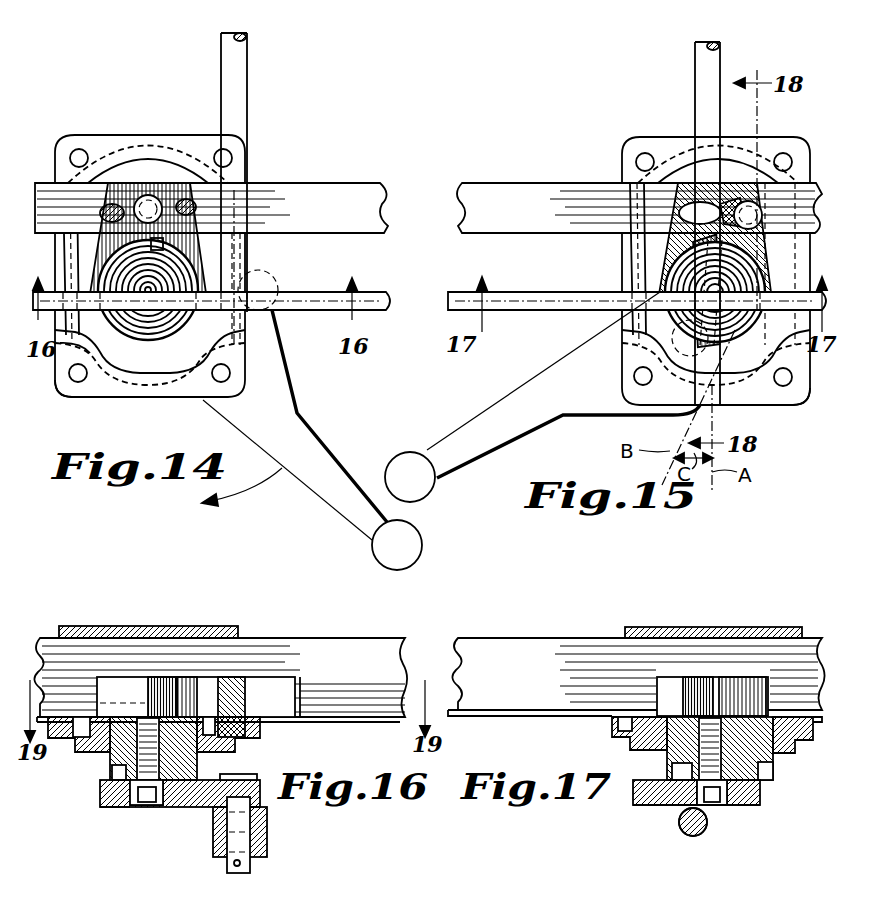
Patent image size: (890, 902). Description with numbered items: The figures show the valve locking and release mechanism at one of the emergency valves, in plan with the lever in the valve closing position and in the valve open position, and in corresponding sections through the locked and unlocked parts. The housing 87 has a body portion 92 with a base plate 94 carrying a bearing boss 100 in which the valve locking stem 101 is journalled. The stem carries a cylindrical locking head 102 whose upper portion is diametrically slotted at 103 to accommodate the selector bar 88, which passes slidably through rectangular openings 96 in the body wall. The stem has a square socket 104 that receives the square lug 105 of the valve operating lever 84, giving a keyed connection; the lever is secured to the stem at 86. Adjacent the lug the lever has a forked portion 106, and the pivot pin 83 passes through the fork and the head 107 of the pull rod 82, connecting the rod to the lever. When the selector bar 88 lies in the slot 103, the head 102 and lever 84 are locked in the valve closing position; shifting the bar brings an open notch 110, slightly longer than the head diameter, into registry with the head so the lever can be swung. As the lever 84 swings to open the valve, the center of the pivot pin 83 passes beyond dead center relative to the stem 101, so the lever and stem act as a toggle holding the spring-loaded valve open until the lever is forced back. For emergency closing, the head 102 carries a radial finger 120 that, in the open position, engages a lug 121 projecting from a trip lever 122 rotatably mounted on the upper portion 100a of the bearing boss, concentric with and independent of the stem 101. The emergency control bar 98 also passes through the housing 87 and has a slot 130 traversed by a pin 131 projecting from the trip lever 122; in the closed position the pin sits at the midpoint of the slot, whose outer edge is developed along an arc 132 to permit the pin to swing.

In FIG. 14, the pull rod 82 is at (248, 60).
In FIG. 15, the pull rod 82 is at (720, 59).
In FIG. 17, the pull rod 82 is at (707, 826).
In FIG. 14, the pivot pin 83 is at (264, 288).
In FIG. 15, the pivot pin 83 is at (668, 415).
In FIG. 16, the pivot pin 83 is at (250, 874).
In FIG. 14, the valve operating lever 84 is at (348, 518).
In FIG. 15, the valve operating lever 84 is at (480, 461).
In FIG. 16, the valve operating lever 84 is at (203, 809).
In FIG. 17, the valve operating lever 84 is at (640, 808).
In FIG. 16, the securing point 86 is at (147, 807).
In FIG. 17, the securing point 86 is at (722, 806).
In FIG. 14, the housing 87 is at (74, 128).
In FIG. 15, the housing 87 is at (613, 153).
In FIG. 16, the housing 87 is at (99, 620).
In FIG. 17, the housing 87 is at (646, 619).
In FIG. 14, the selector bar 88 is at (380, 292).
In FIG. 15, the selector bar 88 is at (527, 310).
In FIG. 16, the selector bar 88 is at (362, 651).
In FIG. 17, the selector bar 88 is at (500, 653).
In FIG. 16, the body portion 92 is at (135, 626).
In FIG. 14, the base plate 94 is at (82, 395).
In FIG. 15, the base plate 94 is at (733, 403).
In FIG. 16, the base plate 94 is at (245, 743).
In FIG. 17, the base plate 94 is at (780, 754).
In FIG. 17, the rectangular openings 96 is at (624, 636).
In FIG. 14, the emergency control bar 98 is at (362, 191).
In FIG. 15, the emergency control bar 98 is at (505, 192).
In FIG. 16, the emergency control bar 98 is at (342, 722).
In FIG. 16, the bearing boss 100 is at (104, 777).
In FIG. 17, the bearing boss 100 is at (765, 772).
In FIG. 16, the upper portion of bearing boss 100a is at (198, 698).
In FIG. 17, the upper portion of bearing boss 100a is at (673, 700).
In FIG. 16, the valve locking stem 101 is at (110, 756).
In FIG. 17, the valve locking stem 101 is at (667, 758).
In FIG. 14, the cylindrical locking head 102 is at (121, 397).
In FIG. 15, the cylindrical locking head 102 is at (678, 338).
In FIG. 16, the cylindrical locking head 102 is at (196, 697).
In FIG. 17, the cylindrical locking head 102 is at (735, 680).
In FIG. 14, the diametrical slot 103 is at (215, 351).
In FIG. 15, the diametrical slot 103 is at (672, 286).
In FIG. 17, the diametrical slot 103 is at (700, 690).
In FIG. 16, the square socket 104 is at (203, 766).
In FIG. 17, the square socket 104 is at (762, 794).
In FIG. 16, the square lug 105 is at (113, 805).
In FIG. 17, the square lug 105 is at (686, 807).
In FIG. 16, the forked portion 106 is at (268, 850).
In FIG. 16, the head of pull rod 107 is at (268, 827).
In FIG. 16, the open notch 110 is at (300, 679).
In FIG. 14, the radial finger 120 is at (88, 343).
In FIG. 15, the radial finger 120 is at (698, 260).
In FIG. 14, the lug 121 is at (196, 244).
In FIG. 15, the lug 121 is at (715, 292).
In FIG. 14, the trip lever 122 is at (78, 244).
In FIG. 15, the trip lever 122 is at (650, 260).
In FIG. 16, the trip lever 122 is at (224, 728).
In FIG. 17, the trip lever 122 is at (624, 738).
In FIG. 14, the slot 130 is at (143, 197).
In FIG. 15, the slot 130 is at (680, 214).
In FIG. 14, the pin 131 is at (152, 201).
In FIG. 15, the pin 131 is at (750, 201).
In FIG. 14, the arc 132 is at (195, 210).
In FIG. 15, the arc 132 is at (702, 168).